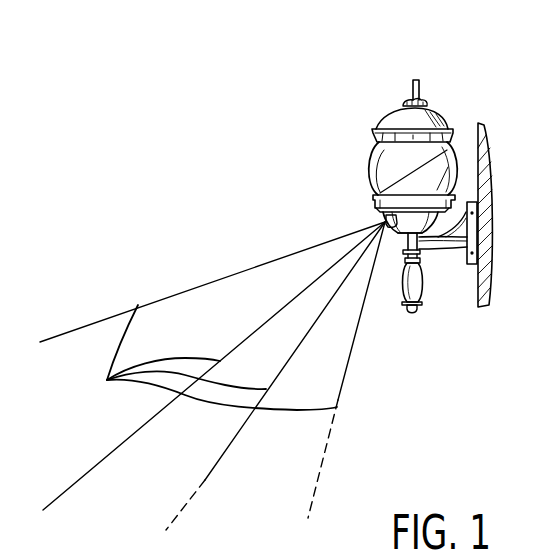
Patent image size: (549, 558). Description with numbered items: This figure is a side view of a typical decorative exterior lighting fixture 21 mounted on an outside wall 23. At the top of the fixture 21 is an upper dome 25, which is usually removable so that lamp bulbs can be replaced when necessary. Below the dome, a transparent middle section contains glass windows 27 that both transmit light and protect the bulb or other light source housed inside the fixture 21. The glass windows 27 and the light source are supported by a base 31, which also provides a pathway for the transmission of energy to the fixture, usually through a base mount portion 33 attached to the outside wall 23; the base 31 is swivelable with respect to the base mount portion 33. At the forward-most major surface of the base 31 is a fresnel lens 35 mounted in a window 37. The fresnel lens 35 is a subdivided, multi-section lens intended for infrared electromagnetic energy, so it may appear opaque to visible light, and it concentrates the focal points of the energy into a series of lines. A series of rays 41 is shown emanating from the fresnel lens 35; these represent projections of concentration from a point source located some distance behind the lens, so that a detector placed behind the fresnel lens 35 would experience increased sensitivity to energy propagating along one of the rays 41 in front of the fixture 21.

The lighting fixture 21 is at (365, 100).
The outside wall 23 is at (473, 140).
The upper dome 25 is at (412, 78).
The glass windows 27 is at (374, 143).
The base 31 is at (387, 229).
The base mount portion 33 is at (457, 250).
The fresnel lens 35 is at (383, 222).
The window 37 is at (405, 222).
The rays 41 is at (212, 376).